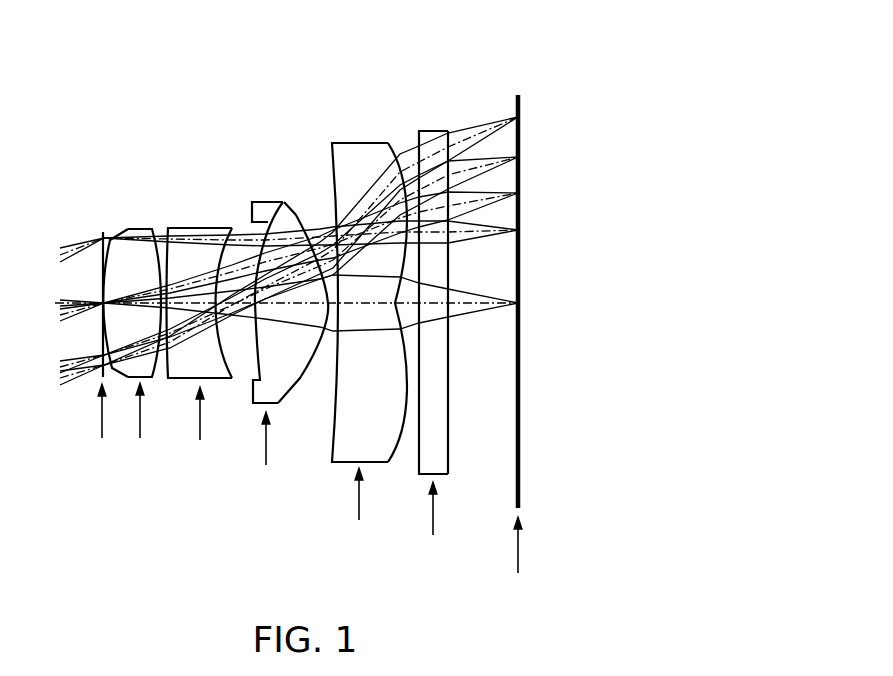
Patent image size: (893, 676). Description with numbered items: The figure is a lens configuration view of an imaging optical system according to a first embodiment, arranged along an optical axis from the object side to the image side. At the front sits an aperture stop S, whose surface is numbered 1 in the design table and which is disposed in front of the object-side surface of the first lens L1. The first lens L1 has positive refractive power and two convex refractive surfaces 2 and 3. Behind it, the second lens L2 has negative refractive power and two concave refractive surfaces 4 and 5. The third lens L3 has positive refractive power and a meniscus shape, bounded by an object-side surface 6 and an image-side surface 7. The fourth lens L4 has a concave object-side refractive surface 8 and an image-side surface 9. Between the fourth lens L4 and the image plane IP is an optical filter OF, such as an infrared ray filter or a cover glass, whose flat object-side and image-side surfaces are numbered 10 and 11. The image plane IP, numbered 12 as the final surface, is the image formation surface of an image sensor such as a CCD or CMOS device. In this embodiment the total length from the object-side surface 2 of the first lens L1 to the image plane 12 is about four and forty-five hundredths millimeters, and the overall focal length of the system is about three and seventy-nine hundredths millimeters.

The aperture stop surface 1 is at (103, 237).
The object-side refractive surface of first lens 2 is at (115, 235).
The image-side refractive surface of first lens 3 is at (158, 236).
The object-side refractive surface of second lens 4 is at (170, 236).
The image-side refractive surface of second lens 5 is at (232, 231).
The object-side refractive surface of third lens 6 is at (255, 221).
The image-side refractive surface of third lens 7 is at (290, 200).
The object-side refractive surface of fourth lens 8 is at (331, 160).
The image-side refractive surface of fourth lens 9 is at (398, 157).
The object-side surface of optical filter 10 is at (419, 136).
The image-side surface of optical filter 11 is at (449, 132).
The image plane 12 is at (521, 132).
The aperture stop S is at (102, 425).
The first lens L1 is at (140, 425).
The second lens L2 is at (200, 428).
The third lens L3 is at (266, 453).
The fourth lens L4 is at (359, 509).
The optical filter OF is at (434, 523).
The image plane IP is at (518, 558).